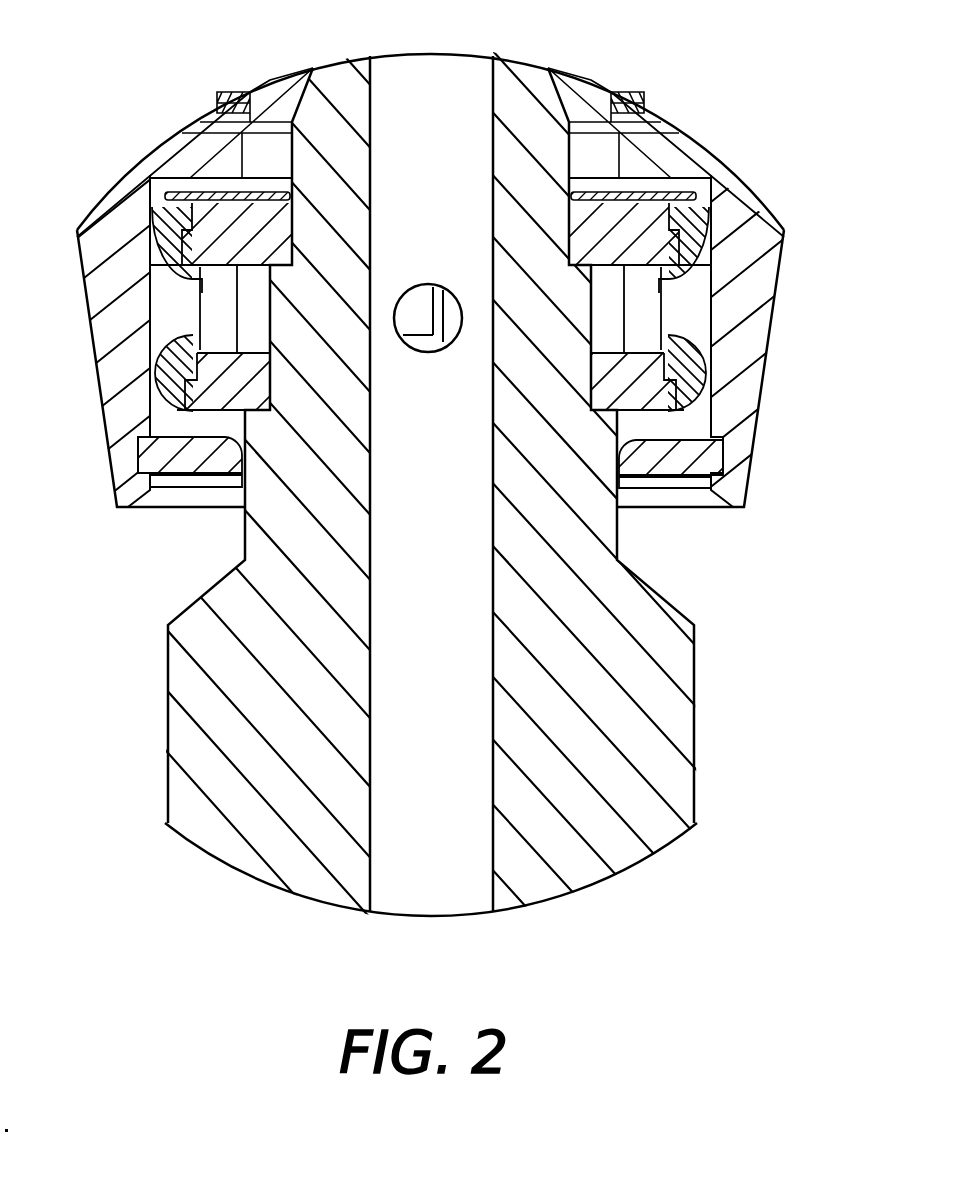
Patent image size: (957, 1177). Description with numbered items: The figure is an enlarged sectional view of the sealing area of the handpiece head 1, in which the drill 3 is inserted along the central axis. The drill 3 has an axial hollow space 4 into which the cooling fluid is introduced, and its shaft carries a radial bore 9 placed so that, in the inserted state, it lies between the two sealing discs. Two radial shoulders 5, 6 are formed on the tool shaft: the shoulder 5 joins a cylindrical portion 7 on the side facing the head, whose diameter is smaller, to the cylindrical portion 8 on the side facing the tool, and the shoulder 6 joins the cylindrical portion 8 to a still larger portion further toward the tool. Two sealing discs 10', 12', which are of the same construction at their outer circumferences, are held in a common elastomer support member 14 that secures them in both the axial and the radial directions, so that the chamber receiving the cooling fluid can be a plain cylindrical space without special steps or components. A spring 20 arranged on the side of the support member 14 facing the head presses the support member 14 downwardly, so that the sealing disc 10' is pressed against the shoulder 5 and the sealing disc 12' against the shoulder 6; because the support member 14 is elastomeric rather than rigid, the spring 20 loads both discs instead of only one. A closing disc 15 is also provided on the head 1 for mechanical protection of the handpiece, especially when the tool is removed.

The handpiece head 1 is at (103, 215).
The drill 3 is at (178, 692).
The axial hollow space 4 is at (446, 113).
The shoulder 5 is at (576, 272).
The shoulder 6 is at (600, 417).
The cylindrical portion 7 is at (292, 222).
The cylindrical portion 8 is at (268, 288).
The radial bore 9 is at (403, 335).
The sealing disc 10' is at (699, 243).
The sealing disc 12' is at (711, 396).
The elastomer support member 14 is at (692, 372).
The closing disc 15 is at (697, 463).
The spring 20 is at (697, 210).